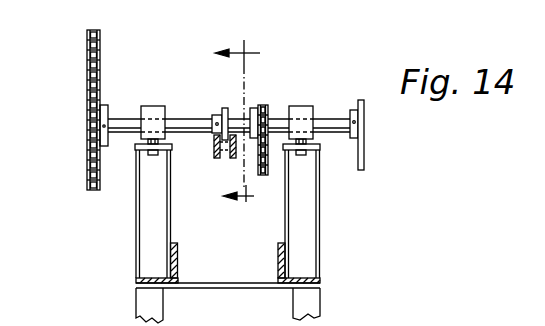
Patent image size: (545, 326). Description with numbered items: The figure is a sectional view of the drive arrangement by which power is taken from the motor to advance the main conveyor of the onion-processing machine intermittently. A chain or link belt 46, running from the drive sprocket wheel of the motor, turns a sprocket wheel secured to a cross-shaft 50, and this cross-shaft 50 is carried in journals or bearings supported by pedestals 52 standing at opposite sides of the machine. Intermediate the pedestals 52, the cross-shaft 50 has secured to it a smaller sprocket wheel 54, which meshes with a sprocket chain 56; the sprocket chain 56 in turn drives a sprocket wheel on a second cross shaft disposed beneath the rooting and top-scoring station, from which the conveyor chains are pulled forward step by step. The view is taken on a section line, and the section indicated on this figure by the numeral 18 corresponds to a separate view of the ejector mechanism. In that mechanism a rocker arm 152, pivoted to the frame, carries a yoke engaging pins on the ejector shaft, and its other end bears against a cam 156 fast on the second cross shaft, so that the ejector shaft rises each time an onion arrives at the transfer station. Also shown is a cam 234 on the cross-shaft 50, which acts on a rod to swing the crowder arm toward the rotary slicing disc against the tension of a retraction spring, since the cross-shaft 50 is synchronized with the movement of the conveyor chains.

The section line 18- 18 is at (248, 127).
The chain or link belt 46 is at (87, 70).
The cross-shaft 50 is at (125, 118).
The pedestals 52 is at (147, 229).
The smaller sprocket wheel 54 is at (252, 104).
The sprocket chain 56 is at (266, 172).
The rocker arm 152 is at (216, 150).
The cam 156 is at (230, 108).
The cam 234 is at (364, 150).